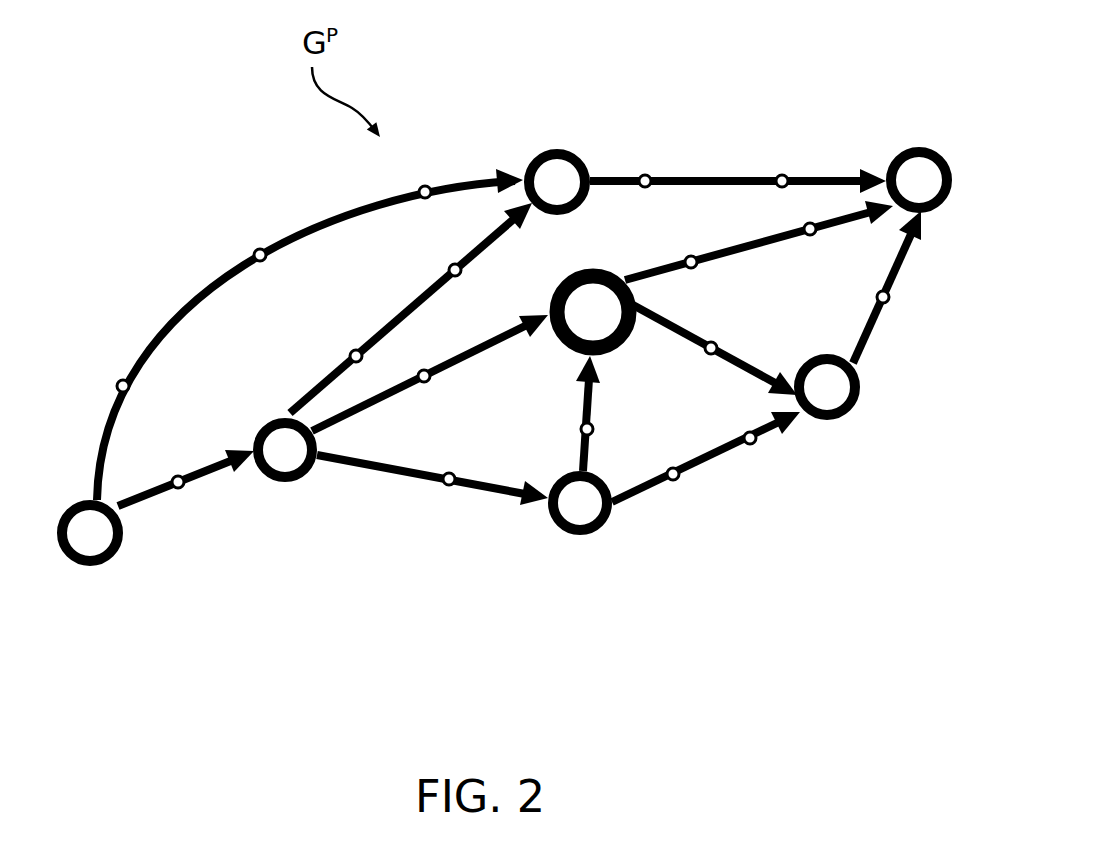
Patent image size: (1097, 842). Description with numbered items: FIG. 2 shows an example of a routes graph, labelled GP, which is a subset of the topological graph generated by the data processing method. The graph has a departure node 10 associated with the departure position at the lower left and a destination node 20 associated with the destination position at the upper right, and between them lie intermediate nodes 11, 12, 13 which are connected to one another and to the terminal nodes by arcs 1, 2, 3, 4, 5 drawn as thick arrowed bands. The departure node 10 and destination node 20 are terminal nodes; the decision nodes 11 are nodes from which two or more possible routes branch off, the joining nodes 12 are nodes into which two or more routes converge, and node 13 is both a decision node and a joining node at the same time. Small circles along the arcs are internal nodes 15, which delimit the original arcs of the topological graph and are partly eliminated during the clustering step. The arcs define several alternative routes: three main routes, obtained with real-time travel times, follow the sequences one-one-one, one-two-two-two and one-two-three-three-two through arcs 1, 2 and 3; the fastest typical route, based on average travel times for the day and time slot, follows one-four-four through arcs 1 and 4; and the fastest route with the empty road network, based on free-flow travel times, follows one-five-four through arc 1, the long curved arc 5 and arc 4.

The arc 1 is at (140, 498).
The arc 2 is at (381, 467).
The arc 3 is at (594, 380).
The arc 4 is at (372, 342).
The arc 5 is at (188, 312).
The departure node 10 is at (85, 563).
The decision node 11 is at (275, 482).
The joining node 12 is at (551, 150).
The intermediate node 13 is at (588, 278).
The internal node 15 is at (122, 378).
The destination node 20 is at (917, 148).